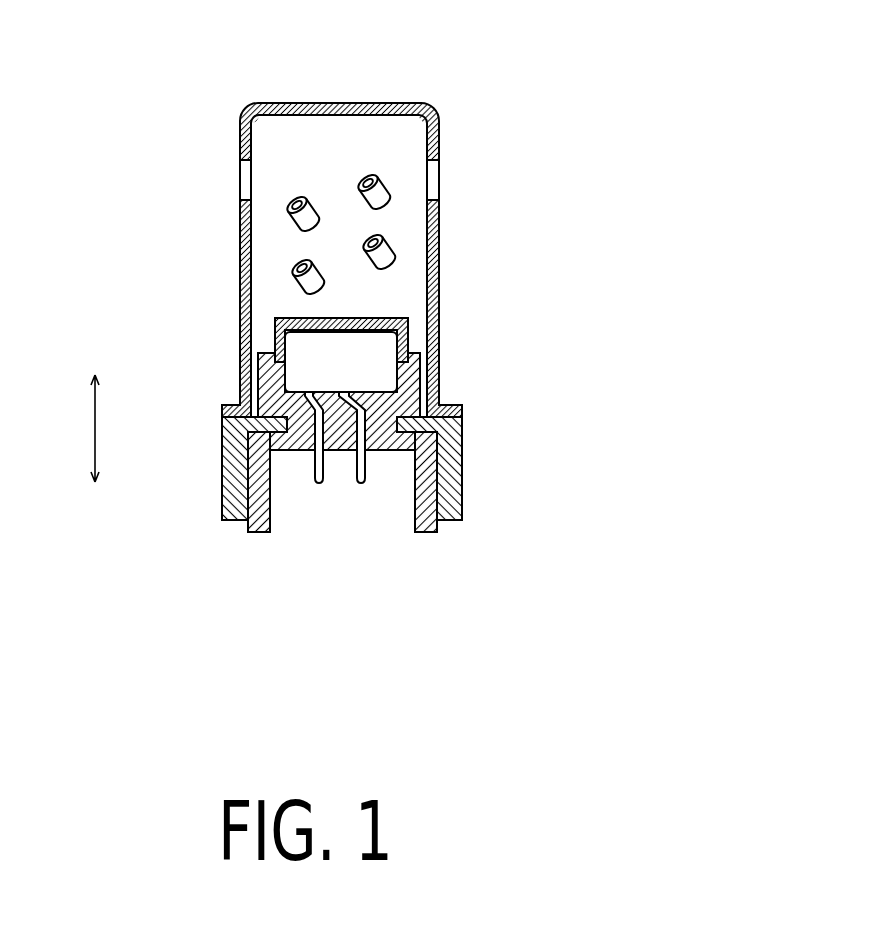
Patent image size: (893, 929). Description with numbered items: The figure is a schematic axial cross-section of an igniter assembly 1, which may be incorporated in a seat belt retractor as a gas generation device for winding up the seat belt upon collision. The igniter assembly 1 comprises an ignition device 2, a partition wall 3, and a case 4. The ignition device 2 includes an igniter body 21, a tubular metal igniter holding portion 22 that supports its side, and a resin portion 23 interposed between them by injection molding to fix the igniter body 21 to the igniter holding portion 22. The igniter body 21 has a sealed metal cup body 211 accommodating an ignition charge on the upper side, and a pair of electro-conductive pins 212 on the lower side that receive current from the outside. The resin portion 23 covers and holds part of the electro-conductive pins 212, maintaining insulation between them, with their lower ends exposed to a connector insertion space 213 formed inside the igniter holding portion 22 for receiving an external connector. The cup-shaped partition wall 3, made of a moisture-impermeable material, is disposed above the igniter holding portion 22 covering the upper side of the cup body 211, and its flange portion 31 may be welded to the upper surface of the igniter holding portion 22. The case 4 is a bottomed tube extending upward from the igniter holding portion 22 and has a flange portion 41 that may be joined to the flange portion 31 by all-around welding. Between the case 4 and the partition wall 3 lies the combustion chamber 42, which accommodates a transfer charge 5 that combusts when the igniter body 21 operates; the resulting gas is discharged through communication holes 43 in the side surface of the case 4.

The igniter assembly 1 is at (230, 70).
The ignition device 2 is at (374, 535).
The igniter body 21 is at (342, 506).
The cup body 211 is at (300, 377).
The electro-conductive pins 212 is at (308, 463).
The connector insertion space 213 is at (367, 522).
The igniter holding portion 22 is at (448, 520).
The resin portion 23 is at (423, 532).
The partition wall 3 is at (380, 318).
The flange portion 31 is at (462, 418).
The case 4 is at (392, 249).
The flange portion 41 is at (450, 406).
The combustion chamber 42 is at (338, 167).
The communication holes 43 is at (432, 180).
The transfer charge 5 is at (386, 246).